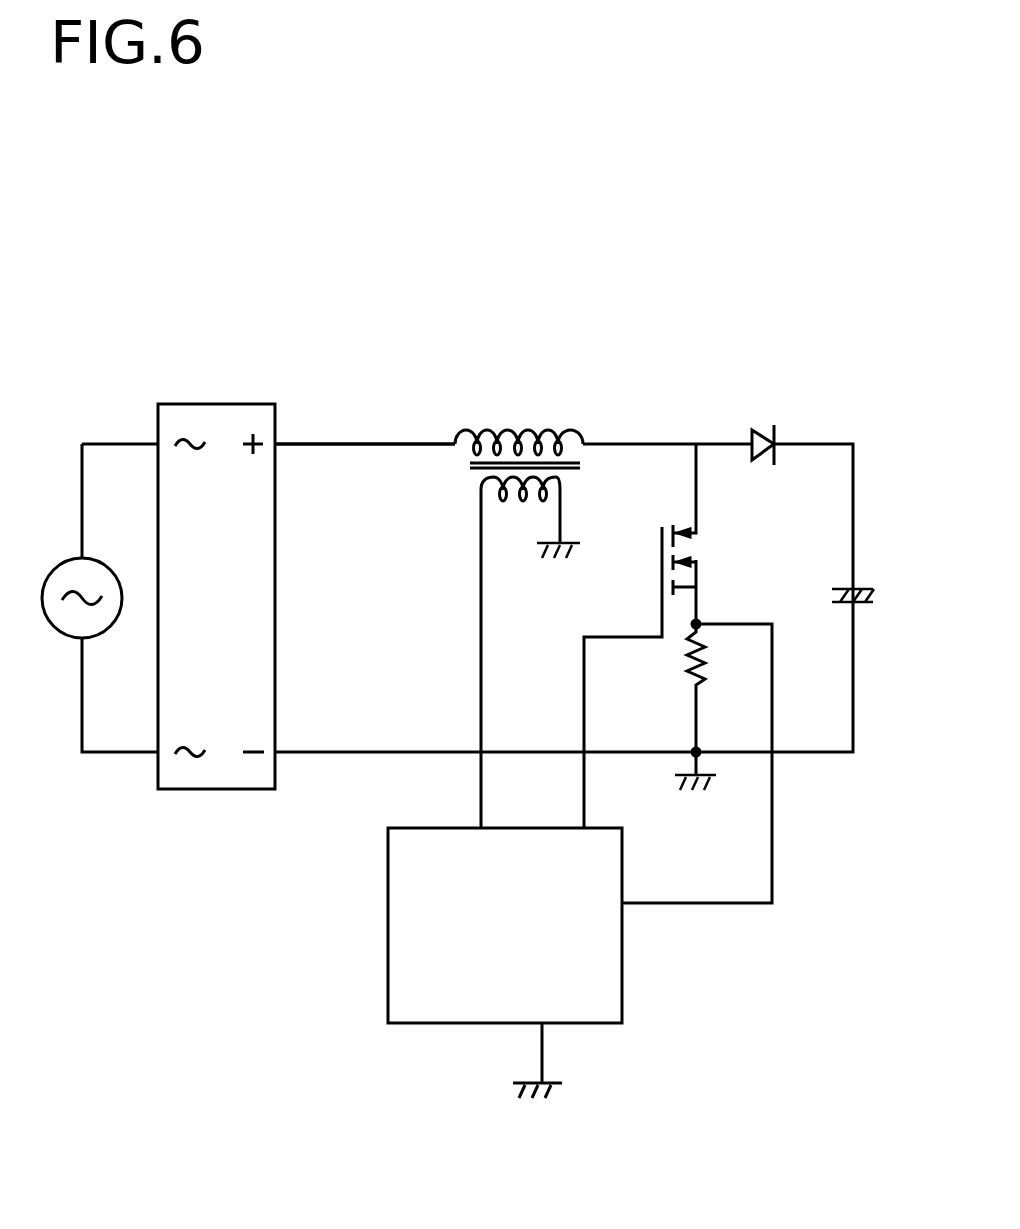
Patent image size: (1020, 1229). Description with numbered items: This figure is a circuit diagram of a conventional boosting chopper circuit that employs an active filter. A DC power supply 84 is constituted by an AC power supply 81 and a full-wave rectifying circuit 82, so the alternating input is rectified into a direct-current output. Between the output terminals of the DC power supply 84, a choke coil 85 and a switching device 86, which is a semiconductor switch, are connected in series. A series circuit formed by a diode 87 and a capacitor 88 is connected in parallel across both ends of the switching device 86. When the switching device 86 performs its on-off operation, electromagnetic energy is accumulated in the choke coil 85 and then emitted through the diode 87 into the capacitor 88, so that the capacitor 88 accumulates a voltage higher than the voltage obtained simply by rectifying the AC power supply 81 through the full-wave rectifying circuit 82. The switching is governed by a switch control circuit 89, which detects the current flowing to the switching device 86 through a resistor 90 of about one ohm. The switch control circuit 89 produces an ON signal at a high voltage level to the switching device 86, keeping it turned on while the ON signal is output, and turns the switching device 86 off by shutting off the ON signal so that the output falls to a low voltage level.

The AC power supply 81 is at (55, 582).
The full-wave rectifying circuit 82 is at (181, 413).
The DC power supply 84 is at (281, 485).
The choke coil 85 is at (524, 430).
The switching device 86 is at (684, 527).
The diode 87 is at (755, 428).
The capacitor 88 is at (866, 588).
The switch control circuit 89 is at (370, 924).
The resistor 90 is at (702, 664).